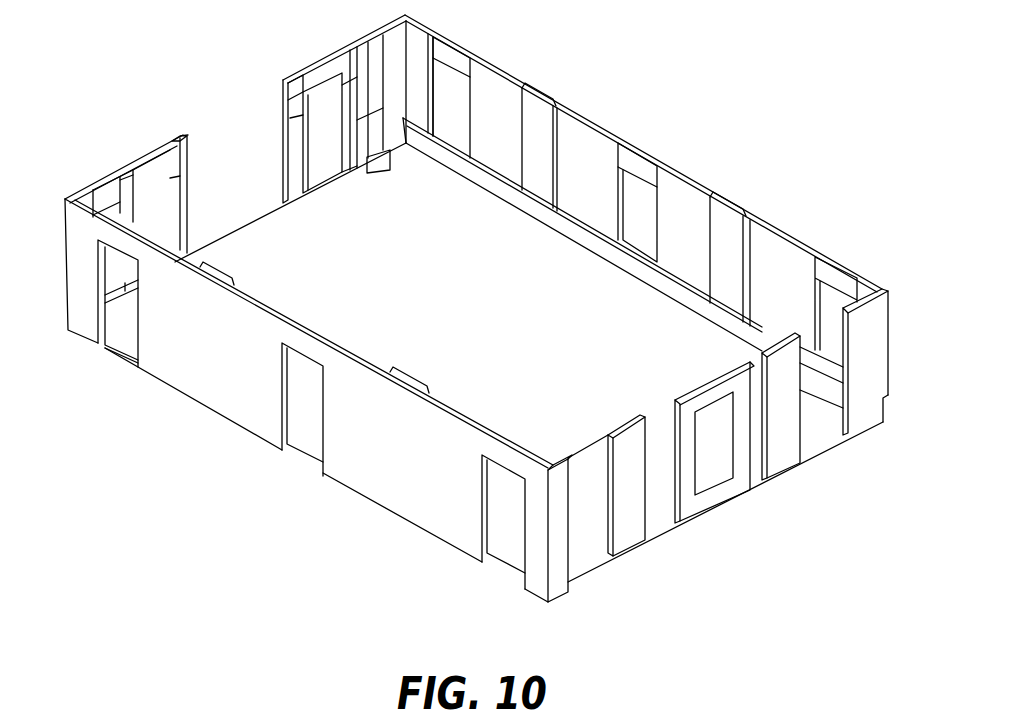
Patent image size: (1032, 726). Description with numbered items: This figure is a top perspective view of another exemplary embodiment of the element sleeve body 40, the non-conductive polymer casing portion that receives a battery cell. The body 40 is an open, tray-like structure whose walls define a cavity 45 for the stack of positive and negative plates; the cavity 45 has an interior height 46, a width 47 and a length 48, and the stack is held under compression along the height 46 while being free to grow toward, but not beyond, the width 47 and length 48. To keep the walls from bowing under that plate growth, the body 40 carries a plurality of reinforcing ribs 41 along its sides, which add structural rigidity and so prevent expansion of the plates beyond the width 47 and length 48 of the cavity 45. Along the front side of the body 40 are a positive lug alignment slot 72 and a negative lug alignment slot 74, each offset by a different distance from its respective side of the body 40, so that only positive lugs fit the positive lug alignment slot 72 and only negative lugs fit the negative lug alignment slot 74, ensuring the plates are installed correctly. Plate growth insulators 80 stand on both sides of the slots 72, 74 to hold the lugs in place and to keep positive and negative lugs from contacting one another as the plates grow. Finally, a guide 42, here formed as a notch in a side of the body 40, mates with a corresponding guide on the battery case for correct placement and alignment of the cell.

The element sleeve body 40 is at (678, 87).
The reinforcing ribs 41 is at (540, 95).
The guide slot 42 is at (887, 410).
The cavity 45 is at (307, 258).
The interior height 46 is at (49, 199).
The width 47 is at (707, 350).
The length 48 is at (552, 252).
The positive lug alignment slot 72 is at (583, 552).
The negative lug alignment slot 74 is at (817, 435).
The plate growth insulators 80 is at (880, 313).